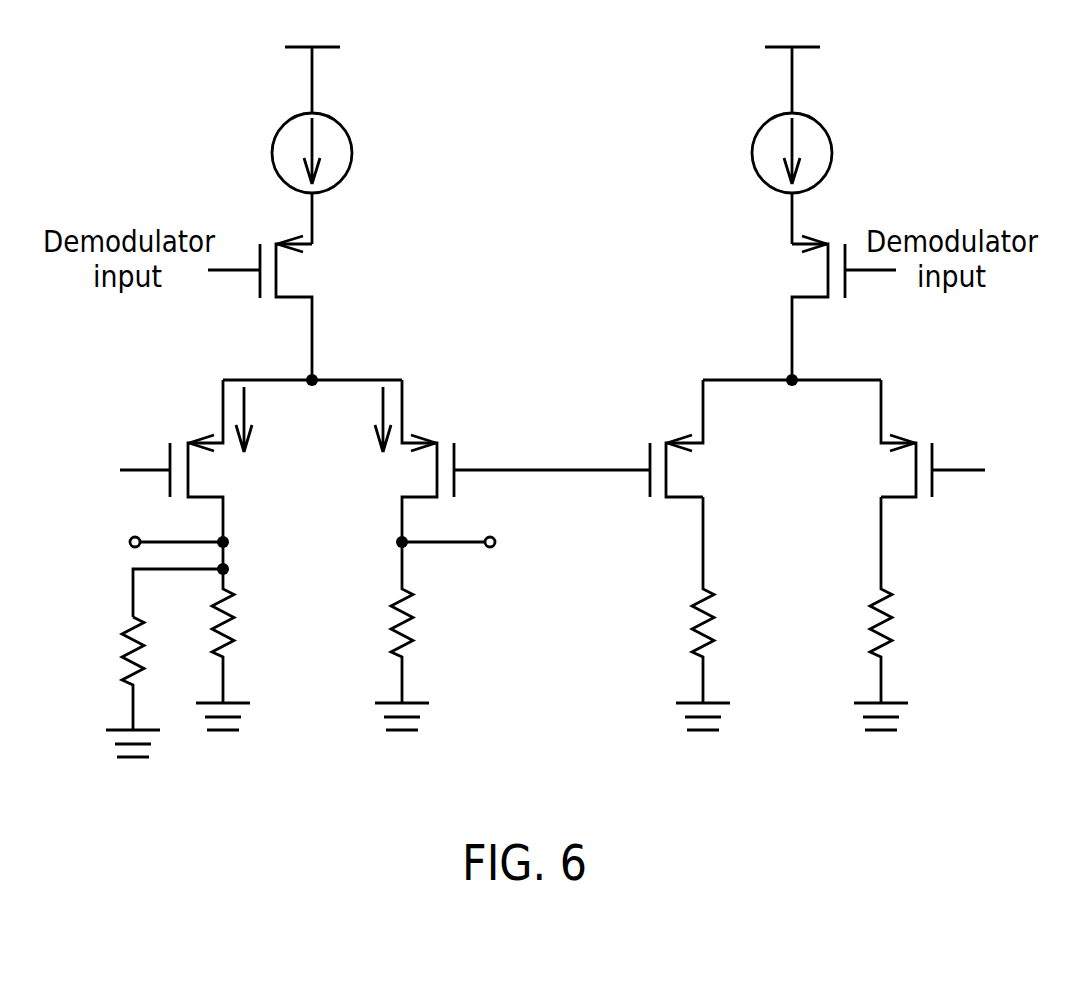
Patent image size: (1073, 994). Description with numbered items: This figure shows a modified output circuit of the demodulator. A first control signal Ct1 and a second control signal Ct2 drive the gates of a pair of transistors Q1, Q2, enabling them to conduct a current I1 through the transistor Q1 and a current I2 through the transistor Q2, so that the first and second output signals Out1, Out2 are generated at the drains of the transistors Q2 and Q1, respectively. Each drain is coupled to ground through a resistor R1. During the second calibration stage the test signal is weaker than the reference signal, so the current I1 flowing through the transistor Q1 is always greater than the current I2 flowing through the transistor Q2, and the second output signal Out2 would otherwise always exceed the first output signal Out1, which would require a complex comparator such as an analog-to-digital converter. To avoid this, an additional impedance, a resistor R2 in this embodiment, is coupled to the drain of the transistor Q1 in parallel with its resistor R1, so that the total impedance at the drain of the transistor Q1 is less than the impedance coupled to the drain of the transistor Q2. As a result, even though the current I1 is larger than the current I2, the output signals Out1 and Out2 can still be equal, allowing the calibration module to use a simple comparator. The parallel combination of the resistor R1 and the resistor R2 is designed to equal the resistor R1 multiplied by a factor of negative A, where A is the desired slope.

The transistor Q1 is at (218, 461).
The transistor Q2 is at (409, 461).
The resistor R1 is at (544, 613).
The impedance (resistor) R2 is at (158, 649).
The current I1 is at (259, 419).
The current I2 is at (371, 419).
The first control signal Ct1 is at (120, 451).
The second control signal Ct2 is at (552, 450).
The first output signal Out1 is at (480, 543).
The second output signal Out2 is at (144, 543).